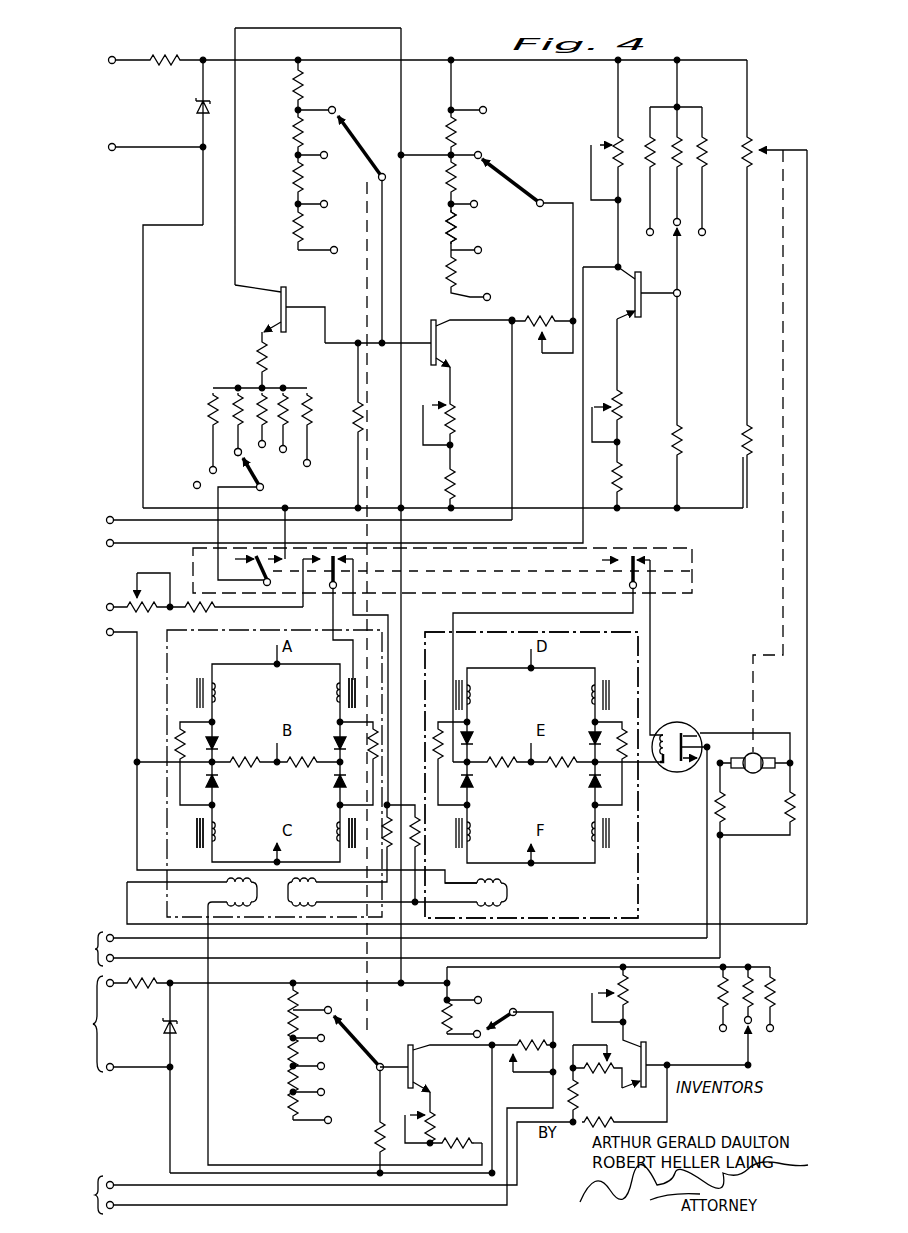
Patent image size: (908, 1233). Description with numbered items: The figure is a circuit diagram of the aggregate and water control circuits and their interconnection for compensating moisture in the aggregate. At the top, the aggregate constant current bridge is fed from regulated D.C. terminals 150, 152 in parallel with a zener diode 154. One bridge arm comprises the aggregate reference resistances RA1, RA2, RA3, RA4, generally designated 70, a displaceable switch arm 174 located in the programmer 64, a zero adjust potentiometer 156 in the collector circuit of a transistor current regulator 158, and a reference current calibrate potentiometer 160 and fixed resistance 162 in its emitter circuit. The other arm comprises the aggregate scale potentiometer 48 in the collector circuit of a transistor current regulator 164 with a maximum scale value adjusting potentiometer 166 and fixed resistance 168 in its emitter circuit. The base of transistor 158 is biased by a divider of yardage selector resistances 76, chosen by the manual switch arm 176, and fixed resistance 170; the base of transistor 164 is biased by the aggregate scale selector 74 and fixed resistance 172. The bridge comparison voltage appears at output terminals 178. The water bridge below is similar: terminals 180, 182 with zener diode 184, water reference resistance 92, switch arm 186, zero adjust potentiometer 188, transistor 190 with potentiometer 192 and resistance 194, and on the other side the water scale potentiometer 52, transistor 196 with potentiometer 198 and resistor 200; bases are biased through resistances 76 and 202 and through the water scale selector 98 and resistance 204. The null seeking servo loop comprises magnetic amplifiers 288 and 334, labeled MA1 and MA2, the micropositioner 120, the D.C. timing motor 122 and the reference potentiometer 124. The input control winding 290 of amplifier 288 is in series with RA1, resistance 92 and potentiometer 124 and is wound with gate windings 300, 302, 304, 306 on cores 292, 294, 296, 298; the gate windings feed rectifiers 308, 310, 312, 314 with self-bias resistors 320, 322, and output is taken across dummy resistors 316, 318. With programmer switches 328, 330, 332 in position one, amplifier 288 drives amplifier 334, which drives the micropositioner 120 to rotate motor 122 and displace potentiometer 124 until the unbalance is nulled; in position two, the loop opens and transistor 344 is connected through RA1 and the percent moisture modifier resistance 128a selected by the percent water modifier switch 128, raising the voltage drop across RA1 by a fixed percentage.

The power supply terminal 150 is at (110, 58).
The power supply terminal 152 is at (109, 150).
The zener diode 154 is at (196, 113).
The yardage selector resistances 76 is at (292, 172).
The switch arm 176 is at (346, 124).
The aggregate reference resistance RA1 is at (447, 133).
The aggregate reference resistance RA2 is at (447, 178).
The aggregate reference resistance RA3 is at (447, 227).
The aggregate reference resistance RA4 is at (447, 273).
The displaceable switch arm 174 is at (504, 172).
The aggregate reference resistance 70 is at (470, 223).
The aggregate scale potentiometer 48 is at (623, 142).
The aggregate scale selector 74 is at (700, 180).
The reference potentiometer 124 is at (748, 172).
The transistor current regulator 164 is at (638, 322).
The maximum scale value adjusting potentiometer 166 is at (620, 416).
The fixed resistance 168 is at (622, 485).
The fixed resistance 172 is at (681, 453).
The transistor current regulator 158 is at (449, 345).
The reference current calibrate potentiometer 160 is at (456, 416).
The fixed resistance 162 is at (456, 491).
The zero adjust potentiometer 156 is at (546, 318).
The transistor 344 is at (276, 302).
The percent water modifier switch 128 is at (262, 482).
The percent moisture modifier resistance 128a is at (237, 432).
The fixed resistance 170 is at (356, 427).
The output terminals 178 is at (106, 542).
The programmer 64 is at (692, 573).
The programmer switch 328 is at (268, 592).
The programmer switch 330 is at (330, 556).
The programmer switch 332 is at (628, 576).
The magnetic amplifier 288 is at (170, 676).
The magnetic amplifier MA1 is at (274, 773).
The core 292 is at (185, 693).
The gate winding 300 is at (218, 687).
The gate winding 302 is at (334, 693).
The core 294 is at (356, 688).
The rectifier 308 is at (218, 741).
The dummy resistor 316 is at (257, 760).
The dummy resistor 318 is at (312, 768).
The rectifier 310 is at (335, 745).
The rectifier 312 is at (218, 783).
The rectifier 314 is at (335, 785).
The self-bias resistor 320 is at (178, 748).
The self-bias resistor 322 is at (376, 757).
The gate winding 304 is at (215, 831).
The core 296 is at (197, 838).
The gate winding 306 is at (334, 837).
The core 298 is at (356, 846).
The input control winding 290 is at (225, 884).
The magnetic amplifier 334 is at (640, 668).
The magnetic amplifier MA2 is at (531, 775).
The micropositioner 120 is at (680, 772).
The D.C. timing motor 122 is at (756, 752).
The power supply terminal 180 is at (112, 988).
The zener diode 184 is at (164, 1028).
The power supply terminal 182 is at (113, 1072).
The fixed resistance 202 is at (375, 1136).
The transistor current regulator 190 is at (416, 1067).
The reference calibrating potentiometer 192 is at (437, 1116).
The fixed resistance 194 is at (448, 1143).
The water reference resistance 92 is at (440, 1009).
The displaceable switch arm 186 is at (510, 1009).
The zero adjust potentiometer 188 is at (522, 1040).
The fixed resistor 200 is at (567, 1097).
The scale adjusting potentiometer 198 is at (588, 1074).
The fixed resistance 204 is at (600, 1122).
The transistor current regulator 196 is at (651, 1057).
The water scale potentiometer 52 is at (628, 998).
The water scale selector 98 is at (758, 972).